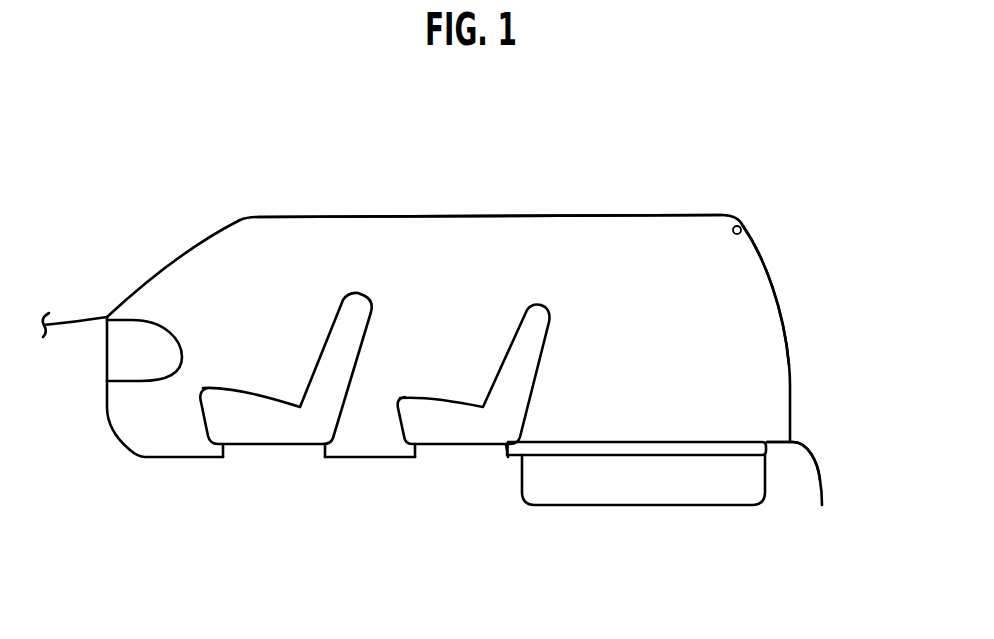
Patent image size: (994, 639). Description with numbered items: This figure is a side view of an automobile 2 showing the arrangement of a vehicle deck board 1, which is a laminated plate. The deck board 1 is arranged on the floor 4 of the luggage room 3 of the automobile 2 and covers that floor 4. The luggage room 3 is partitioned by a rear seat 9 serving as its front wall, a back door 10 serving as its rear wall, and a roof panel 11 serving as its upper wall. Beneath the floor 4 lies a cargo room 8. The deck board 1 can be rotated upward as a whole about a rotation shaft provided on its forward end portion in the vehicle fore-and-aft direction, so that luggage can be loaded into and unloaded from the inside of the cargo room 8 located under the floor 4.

The vehicle deck board 1 is at (692, 456).
The automobile 2 is at (786, 291).
The luggage room 3 is at (622, 307).
The floor 4 is at (778, 443).
The cargo room 8 is at (630, 480).
The rear seat 9 is at (497, 343).
The back door 10 is at (788, 328).
The roof panel 11 is at (582, 217).